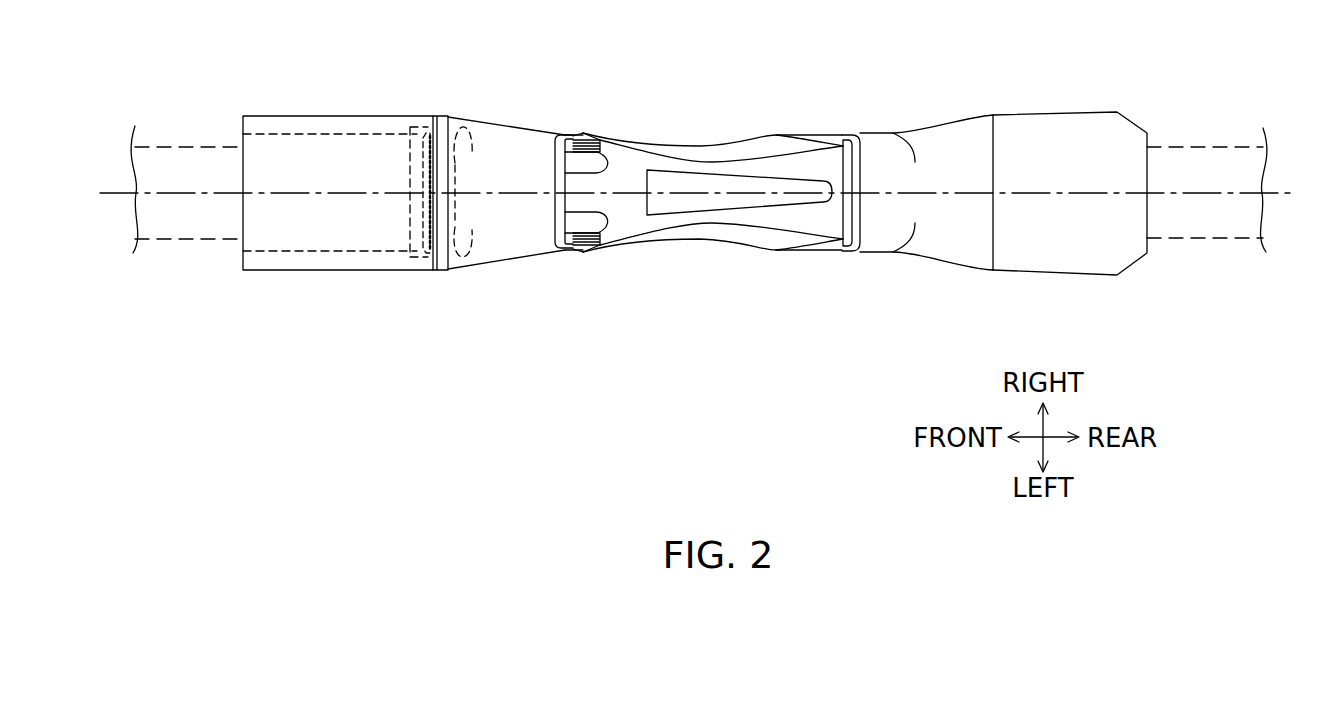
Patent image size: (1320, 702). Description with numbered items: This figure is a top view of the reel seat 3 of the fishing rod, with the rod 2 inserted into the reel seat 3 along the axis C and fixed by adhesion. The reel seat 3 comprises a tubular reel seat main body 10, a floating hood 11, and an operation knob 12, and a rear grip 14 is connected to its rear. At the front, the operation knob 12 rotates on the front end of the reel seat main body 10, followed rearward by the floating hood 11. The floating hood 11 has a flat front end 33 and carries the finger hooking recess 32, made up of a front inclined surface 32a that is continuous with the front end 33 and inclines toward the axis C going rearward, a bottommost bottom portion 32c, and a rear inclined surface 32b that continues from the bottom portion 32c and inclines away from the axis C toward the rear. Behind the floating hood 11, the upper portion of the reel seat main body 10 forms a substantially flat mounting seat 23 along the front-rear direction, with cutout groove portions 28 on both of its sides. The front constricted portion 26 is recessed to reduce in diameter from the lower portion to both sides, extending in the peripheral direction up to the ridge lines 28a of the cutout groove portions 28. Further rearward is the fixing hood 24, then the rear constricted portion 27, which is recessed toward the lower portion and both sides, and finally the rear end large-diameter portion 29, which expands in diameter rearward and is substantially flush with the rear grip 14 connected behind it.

The rod 2 is at (165, 147).
The reel seat 3 is at (808, 367).
The reel seat main body 10 is at (721, 292).
The floating hood 11 is at (527, 213).
The operation knob 12 is at (303, 116).
The rear grip 14 is at (1067, 133).
The mounting seat 23 is at (664, 182).
The fixing hood 24 is at (835, 163).
The front constricted portion 26 is at (660, 150).
The rear constricted portion 27 is at (895, 133).
The cutout groove portion 28 is at (760, 222).
The ridge line 28a is at (765, 135).
The rear end large-diameter portion 29 is at (993, 132).
The finger hooking recess 32 is at (481, 292).
The front inclined surface 32a is at (462, 155).
The rear inclined surface 32b is at (533, 170).
The bottom portion 32c is at (480, 172).
The front end 33 is at (444, 116).
The axis C is at (1280, 190).